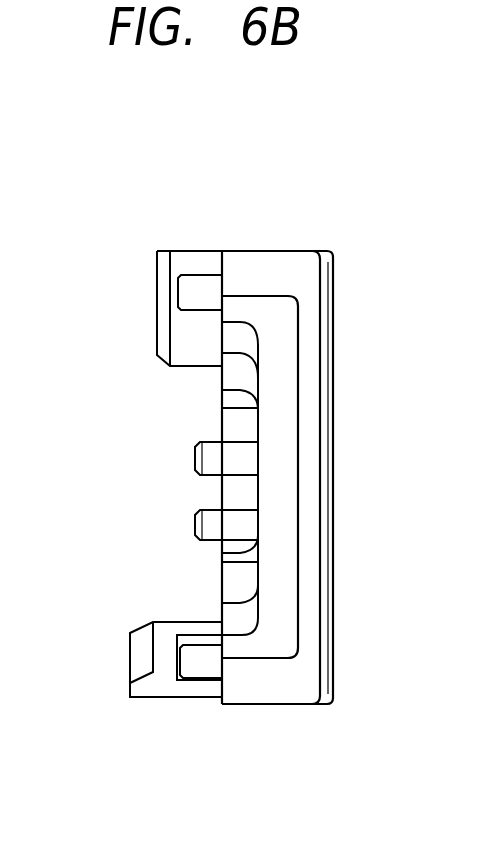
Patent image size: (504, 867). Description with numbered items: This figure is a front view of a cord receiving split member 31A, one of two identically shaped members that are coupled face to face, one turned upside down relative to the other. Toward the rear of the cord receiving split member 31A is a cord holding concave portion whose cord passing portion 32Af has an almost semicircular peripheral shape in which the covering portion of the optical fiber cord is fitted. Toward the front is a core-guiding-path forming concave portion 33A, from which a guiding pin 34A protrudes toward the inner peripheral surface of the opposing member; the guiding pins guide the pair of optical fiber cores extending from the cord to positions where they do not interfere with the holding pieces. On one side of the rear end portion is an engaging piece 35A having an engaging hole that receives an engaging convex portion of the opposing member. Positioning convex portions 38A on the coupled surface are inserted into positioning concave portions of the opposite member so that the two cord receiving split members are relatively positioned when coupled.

The cord receiving split member 31A is at (262, 232).
The cord passing portion 32Af is at (258, 414).
The core-guiding-path forming concave portion 33A is at (257, 568).
The guiding pin 34A is at (195, 458).
The engaging piece 35A is at (148, 690).
The positioning convex portion 38A is at (198, 280).